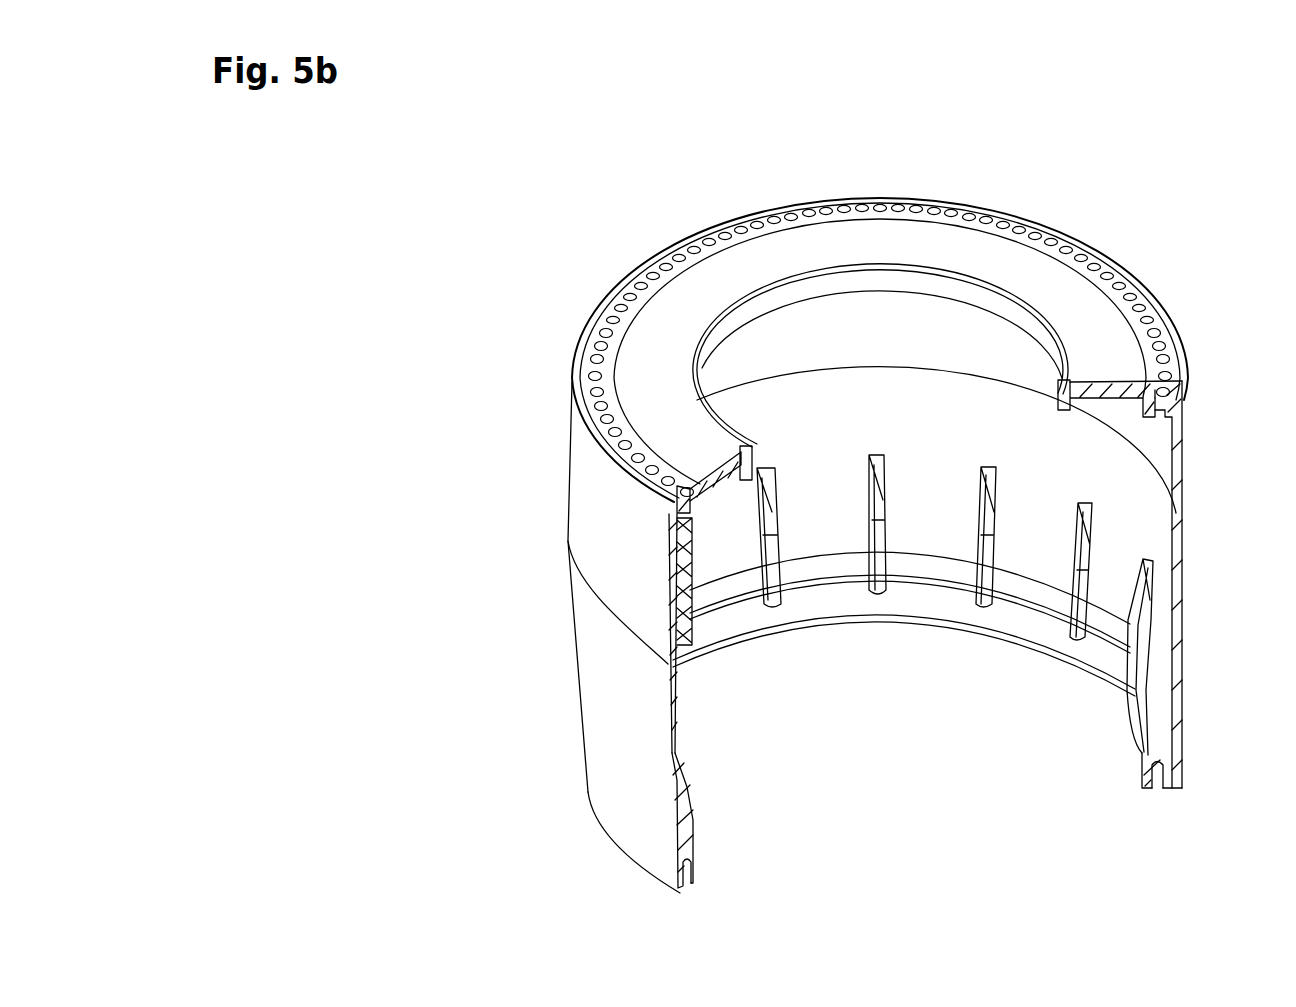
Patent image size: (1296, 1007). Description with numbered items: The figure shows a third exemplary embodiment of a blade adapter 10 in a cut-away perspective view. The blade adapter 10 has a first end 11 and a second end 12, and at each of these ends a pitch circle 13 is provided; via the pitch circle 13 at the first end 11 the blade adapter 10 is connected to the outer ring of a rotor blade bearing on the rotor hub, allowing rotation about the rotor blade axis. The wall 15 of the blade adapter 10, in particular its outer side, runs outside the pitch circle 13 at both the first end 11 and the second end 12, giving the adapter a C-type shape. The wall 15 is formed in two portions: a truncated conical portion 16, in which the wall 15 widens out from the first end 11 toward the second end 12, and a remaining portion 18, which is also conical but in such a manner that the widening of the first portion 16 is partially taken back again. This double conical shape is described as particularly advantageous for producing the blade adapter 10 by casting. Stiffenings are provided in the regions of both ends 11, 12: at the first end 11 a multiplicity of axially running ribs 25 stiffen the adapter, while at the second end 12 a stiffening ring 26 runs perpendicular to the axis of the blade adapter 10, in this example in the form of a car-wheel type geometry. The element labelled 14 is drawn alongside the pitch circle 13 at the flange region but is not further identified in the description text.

The blade adapter 10 is at (1205, 178).
The first end 11 is at (945, 842).
The second end 12 is at (903, 178).
The pitch circle 13 is at (1113, 278).
The flange 14 is at (1147, 298).
The wall 15 is at (1184, 548).
The truncated conical portion 16 is at (552, 538).
The remaining portion 18 is at (552, 360).
The ribs 25 is at (882, 495).
The stiffening ring 26 is at (1033, 265).